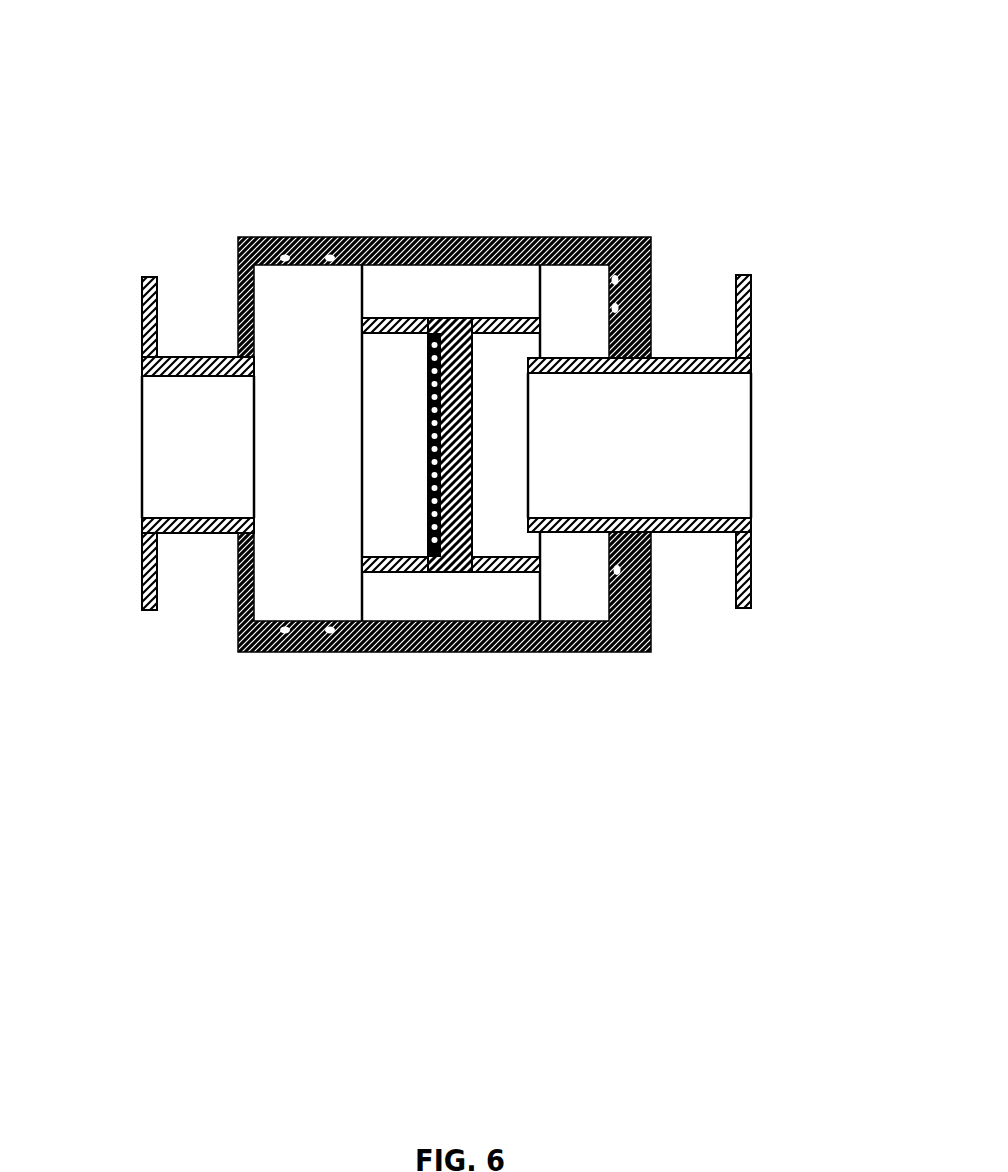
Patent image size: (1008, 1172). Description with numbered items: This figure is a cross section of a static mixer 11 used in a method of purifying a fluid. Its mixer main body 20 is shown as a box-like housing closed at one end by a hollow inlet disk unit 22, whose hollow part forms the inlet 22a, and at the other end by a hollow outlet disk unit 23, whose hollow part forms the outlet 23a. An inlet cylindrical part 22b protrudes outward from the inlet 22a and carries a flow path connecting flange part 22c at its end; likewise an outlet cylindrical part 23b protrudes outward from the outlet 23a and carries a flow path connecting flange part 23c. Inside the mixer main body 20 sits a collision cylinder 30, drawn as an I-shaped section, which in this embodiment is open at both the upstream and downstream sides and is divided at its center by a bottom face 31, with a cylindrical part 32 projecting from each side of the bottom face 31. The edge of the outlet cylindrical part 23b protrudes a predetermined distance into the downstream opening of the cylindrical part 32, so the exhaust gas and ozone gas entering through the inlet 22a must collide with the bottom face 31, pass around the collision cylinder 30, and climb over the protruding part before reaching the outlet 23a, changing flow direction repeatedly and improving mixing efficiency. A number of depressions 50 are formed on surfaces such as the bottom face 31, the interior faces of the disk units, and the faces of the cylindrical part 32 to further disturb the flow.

The static mixer 11 is at (718, 138).
The mixer main body 20 is at (416, 218).
The hollow inlet disk unit 22 is at (210, 339).
The inlet 22a is at (253, 473).
The inlet cylindrical part 22b is at (198, 533).
The flow path connecting flange part 22c is at (143, 567).
The hollow outlet disk unit 23 is at (713, 318).
The outlet 23a is at (548, 452).
The outlet cylindrical part 23b is at (710, 533).
The flow path connecting flange part 23c is at (752, 578).
The collision cylinder 30 is at (428, 590).
The bottom face 31 is at (473, 465).
The cylindrical part 32 is at (390, 317).
The depressions 50 is at (272, 242).